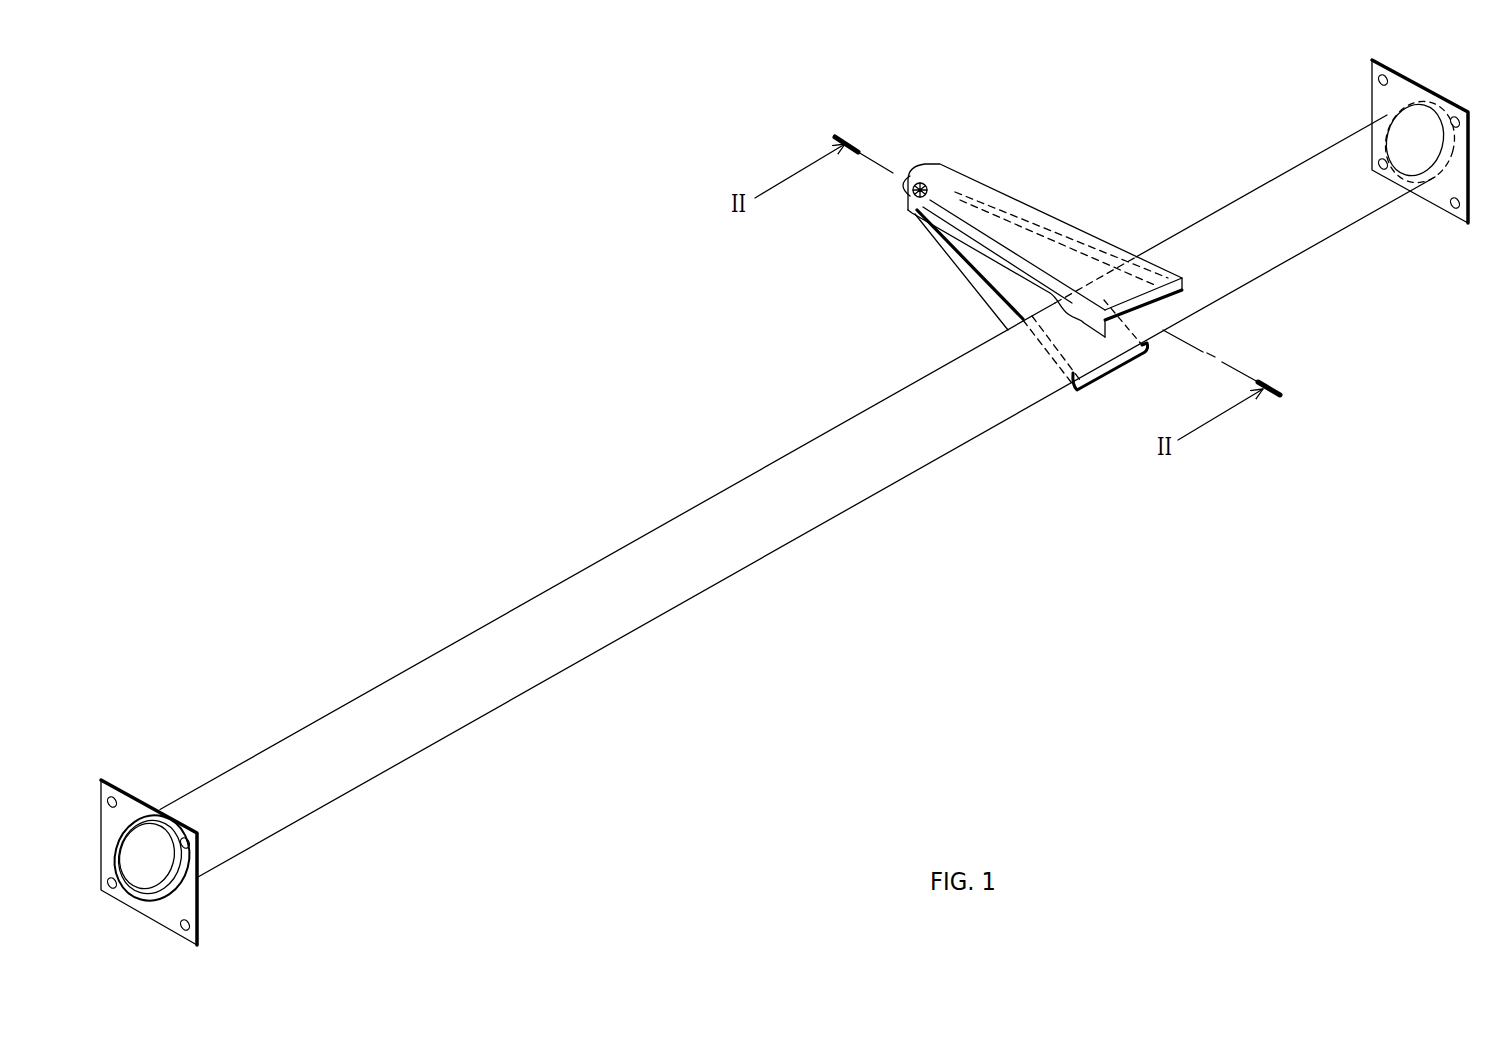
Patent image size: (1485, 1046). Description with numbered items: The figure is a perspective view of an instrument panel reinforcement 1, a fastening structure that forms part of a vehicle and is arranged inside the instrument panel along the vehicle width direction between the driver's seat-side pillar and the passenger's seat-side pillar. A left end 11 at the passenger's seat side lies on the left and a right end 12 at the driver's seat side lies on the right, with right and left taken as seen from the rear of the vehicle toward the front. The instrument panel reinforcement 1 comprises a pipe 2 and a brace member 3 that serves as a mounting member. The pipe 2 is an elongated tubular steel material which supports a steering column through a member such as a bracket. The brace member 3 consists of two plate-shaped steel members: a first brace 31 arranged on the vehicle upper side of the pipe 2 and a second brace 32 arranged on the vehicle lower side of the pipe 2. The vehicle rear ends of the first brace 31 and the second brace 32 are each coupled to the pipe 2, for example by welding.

The instrument panel reinforcement 1 is at (515, 315).
The pipe 2 is at (764, 487).
The left end 11 is at (220, 797).
The right end 12 is at (1320, 170).
The brace member 3 is at (1003, 176).
The first brace 31 is at (1047, 225).
The second brace 32 is at (952, 257).